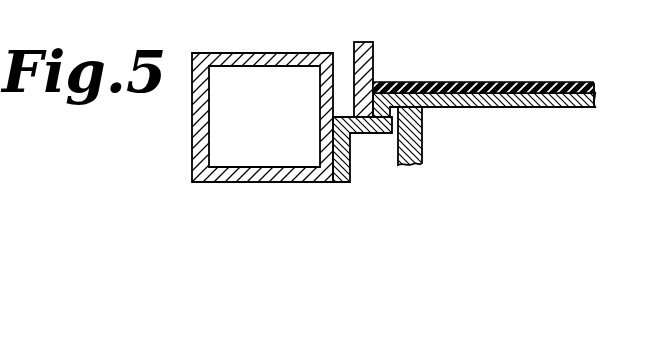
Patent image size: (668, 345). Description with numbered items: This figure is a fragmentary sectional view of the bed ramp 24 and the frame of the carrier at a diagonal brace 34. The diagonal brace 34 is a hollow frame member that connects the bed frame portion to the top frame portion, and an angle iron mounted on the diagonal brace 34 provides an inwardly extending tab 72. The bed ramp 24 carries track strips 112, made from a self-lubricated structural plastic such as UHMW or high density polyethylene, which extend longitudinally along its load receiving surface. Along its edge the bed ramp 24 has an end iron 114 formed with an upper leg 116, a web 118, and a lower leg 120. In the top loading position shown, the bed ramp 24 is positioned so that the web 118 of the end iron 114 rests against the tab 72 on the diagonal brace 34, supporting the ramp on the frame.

The diagonal brace 34 is at (187, 127).
The tab 72 is at (347, 115).
The upper leg 116 is at (378, 47).
The end iron 114 is at (378, 72).
The track strip 112 is at (518, 80).
The bed ramp 24 is at (567, 83).
The lower leg 120 is at (422, 133).
The web 118 is at (392, 135).